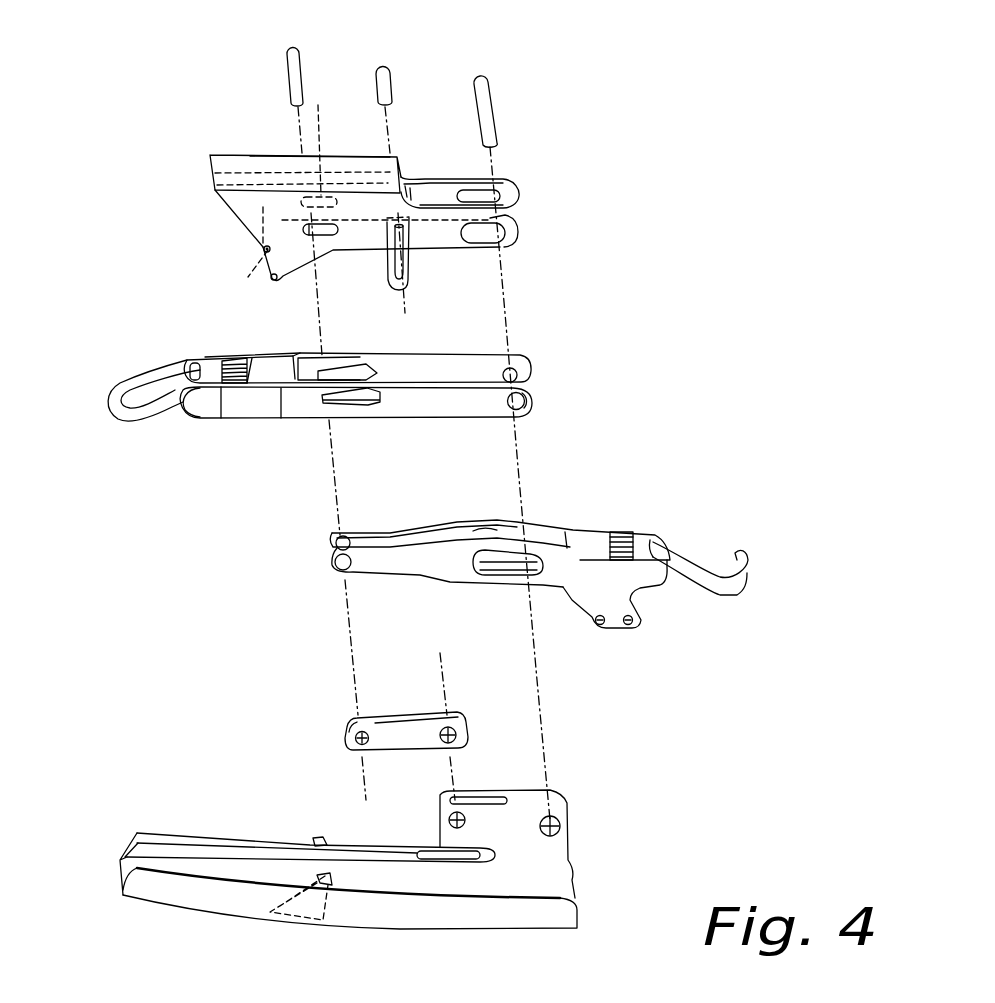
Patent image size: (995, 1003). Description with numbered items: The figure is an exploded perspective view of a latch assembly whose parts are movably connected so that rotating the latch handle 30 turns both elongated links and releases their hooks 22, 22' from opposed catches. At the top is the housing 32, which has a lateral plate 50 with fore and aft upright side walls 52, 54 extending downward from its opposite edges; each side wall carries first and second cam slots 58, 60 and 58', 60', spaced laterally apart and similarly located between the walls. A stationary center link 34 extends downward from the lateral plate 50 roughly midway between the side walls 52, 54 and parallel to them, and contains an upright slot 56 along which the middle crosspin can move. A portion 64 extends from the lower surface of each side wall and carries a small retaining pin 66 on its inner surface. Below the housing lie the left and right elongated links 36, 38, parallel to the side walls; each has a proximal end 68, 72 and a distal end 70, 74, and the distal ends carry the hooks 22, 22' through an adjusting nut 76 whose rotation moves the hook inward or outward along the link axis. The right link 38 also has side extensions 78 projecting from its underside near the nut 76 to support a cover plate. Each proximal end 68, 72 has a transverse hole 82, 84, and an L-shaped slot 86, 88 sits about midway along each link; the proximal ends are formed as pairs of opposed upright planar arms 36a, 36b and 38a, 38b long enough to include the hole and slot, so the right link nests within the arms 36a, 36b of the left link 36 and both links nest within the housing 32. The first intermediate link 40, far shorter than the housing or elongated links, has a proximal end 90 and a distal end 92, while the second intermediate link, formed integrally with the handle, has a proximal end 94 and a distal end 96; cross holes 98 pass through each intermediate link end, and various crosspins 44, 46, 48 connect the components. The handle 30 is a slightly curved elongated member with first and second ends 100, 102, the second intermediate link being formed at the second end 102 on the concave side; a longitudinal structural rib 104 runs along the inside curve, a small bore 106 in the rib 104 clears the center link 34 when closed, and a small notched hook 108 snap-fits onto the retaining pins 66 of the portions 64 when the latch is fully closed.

The hook 22 is at (138, 372).
The hook 22' is at (719, 555).
The latch handle 30 is at (553, 923).
The housing 32 is at (246, 152).
The stationary center link 34 is at (418, 263).
The left elongated link 36 is at (273, 353).
The upright planar arm 36a is at (453, 417).
The upright planar arm 36b is at (447, 363).
The right elongated link 38 is at (593, 540).
The upright planar arm 38a is at (443, 570).
The upright planar arm 38b is at (427, 522).
The first intermediate link 40 is at (405, 733).
The crosspin 44 is at (287, 58).
The crosspin 46 is at (492, 96).
The crosspin 48 is at (381, 72).
The lateral plate 50 is at (330, 160).
The fore upright side wall 52 is at (230, 217).
The aft upright side wall 54 is at (425, 178).
The upright slot 56 is at (387, 267).
The first cam slot 58 is at (333, 258).
The first cam slot 58' is at (331, 147).
The second cam slot 60 is at (518, 230).
The second cam slot 60' is at (507, 176).
The extending portion 64 is at (283, 267).
The retaining pin 66 is at (260, 253).
The proximal end 68 is at (532, 407).
The distal end 70 is at (197, 403).
The proximal end 72 is at (348, 532).
The distal end 74 is at (653, 587).
The adjusting nut 76 is at (227, 367).
The side extensions 78 is at (613, 627).
The hole 82 is at (527, 382).
The hole 84 is at (337, 560).
The L-shaped slot 86 is at (360, 372).
The L-shaped slot 88 is at (510, 570).
The proximal end 90 is at (453, 713).
The distal end 92 is at (347, 730).
The proximal end 94 is at (443, 803).
The distal end 96 is at (563, 803).
The cross holes 98 is at (457, 737).
The handle first end 100 is at (120, 870).
The handle second end 102 is at (577, 910).
The longitudinal structural rib 104 is at (227, 853).
The small bore 106 is at (433, 857).
The notched hook 108 is at (320, 840).